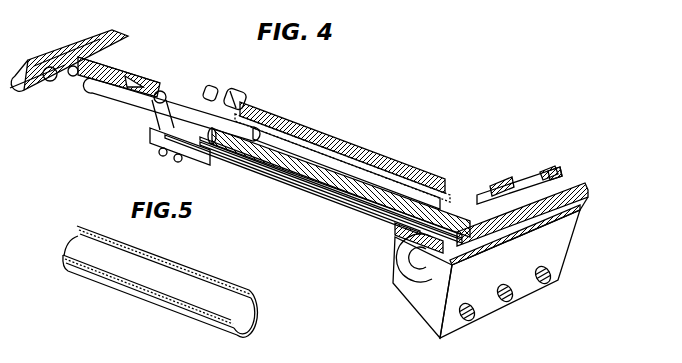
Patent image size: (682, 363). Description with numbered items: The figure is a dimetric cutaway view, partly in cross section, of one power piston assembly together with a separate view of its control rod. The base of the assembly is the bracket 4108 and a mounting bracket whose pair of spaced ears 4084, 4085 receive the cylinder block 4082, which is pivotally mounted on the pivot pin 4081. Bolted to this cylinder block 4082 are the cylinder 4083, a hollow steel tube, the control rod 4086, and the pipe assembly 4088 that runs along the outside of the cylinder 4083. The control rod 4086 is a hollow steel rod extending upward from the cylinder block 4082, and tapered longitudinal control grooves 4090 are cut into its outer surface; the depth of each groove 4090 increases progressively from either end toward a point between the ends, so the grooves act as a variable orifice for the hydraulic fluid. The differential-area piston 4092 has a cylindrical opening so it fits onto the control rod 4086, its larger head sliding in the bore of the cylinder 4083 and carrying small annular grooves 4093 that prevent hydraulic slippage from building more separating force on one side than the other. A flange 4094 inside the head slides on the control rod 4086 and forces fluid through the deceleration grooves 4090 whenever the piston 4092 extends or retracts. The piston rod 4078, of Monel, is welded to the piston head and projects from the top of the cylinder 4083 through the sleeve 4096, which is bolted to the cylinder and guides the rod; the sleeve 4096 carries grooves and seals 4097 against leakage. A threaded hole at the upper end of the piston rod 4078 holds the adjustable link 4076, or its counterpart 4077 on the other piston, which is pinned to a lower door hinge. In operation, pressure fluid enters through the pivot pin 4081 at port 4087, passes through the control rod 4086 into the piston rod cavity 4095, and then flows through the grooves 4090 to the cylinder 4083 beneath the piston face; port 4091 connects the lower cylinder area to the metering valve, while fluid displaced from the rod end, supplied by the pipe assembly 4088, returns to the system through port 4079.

In FIG. 4, the adjustable connecting link 4076 is at (100, 62).
In FIG. 4, the adjustable connecting link 4077 is at (136, 63).
In FIG. 4, the piston rod 4078 is at (175, 91).
In FIG. 4, the port 4079 is at (417, 245).
In FIG. 4, the pivot pin 4081 is at (523, 180).
In FIG. 4, the cylinder block 4082 is at (478, 248).
In FIG. 4, the cylinder 4083 is at (283, 125).
In FIG. 4, the ear 4084 is at (392, 236).
In FIG. 4, the ear 4085 is at (500, 180).
In FIG. 4, the control rod 4086 is at (383, 180).
In FIG. 5, the control rod 4086 is at (157, 277).
In FIG. 4, the port 4087 is at (565, 181).
In FIG. 4, the pipe assembly 4088 is at (262, 173).
In FIG. 5, the control groove 4090 is at (238, 328).
In FIG. 4, the port 4091 is at (551, 174).
In FIG. 4, the piston 4092 is at (332, 147).
In FIG. 4, the annular grooves 4093 is at (350, 155).
In FIG. 4, the flange 4094 is at (330, 175).
In FIG. 4, the piston rod cavity 4095 is at (167, 98).
In FIG. 4, the sleeve 4096 is at (213, 95).
In FIG. 4, the grooves and seals 4097 is at (232, 104).
In FIG. 4, the bracket 4108 is at (563, 252).